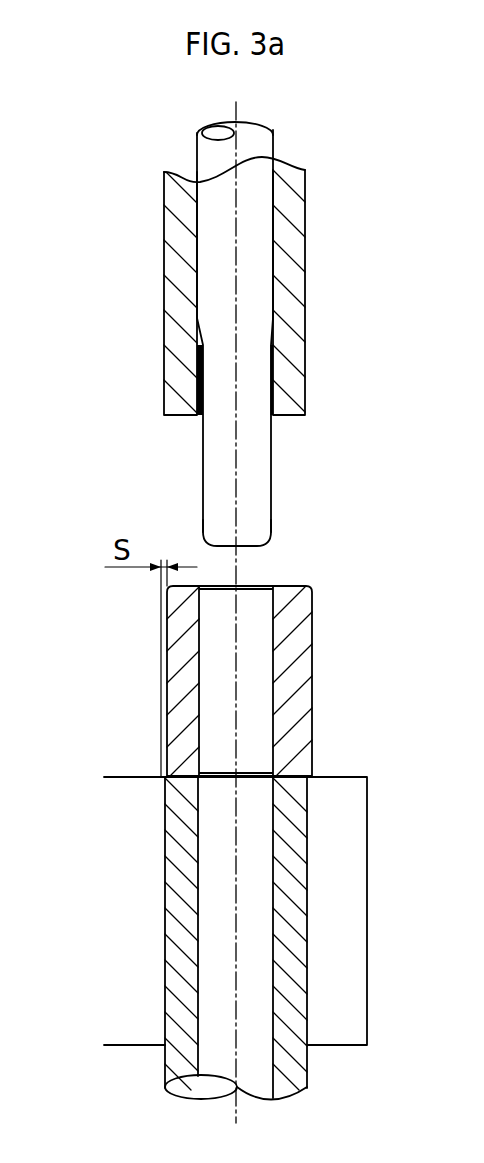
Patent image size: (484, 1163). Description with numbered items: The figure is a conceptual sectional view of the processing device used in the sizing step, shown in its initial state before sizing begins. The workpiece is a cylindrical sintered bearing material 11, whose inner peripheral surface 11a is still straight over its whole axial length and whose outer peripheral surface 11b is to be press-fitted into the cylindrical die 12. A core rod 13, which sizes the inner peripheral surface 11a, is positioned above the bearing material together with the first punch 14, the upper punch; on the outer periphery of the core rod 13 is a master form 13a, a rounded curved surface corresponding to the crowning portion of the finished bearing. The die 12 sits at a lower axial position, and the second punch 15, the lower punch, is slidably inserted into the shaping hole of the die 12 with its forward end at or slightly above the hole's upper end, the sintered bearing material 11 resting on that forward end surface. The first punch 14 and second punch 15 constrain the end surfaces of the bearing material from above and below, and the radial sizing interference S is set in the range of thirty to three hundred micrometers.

The sintered bearing material 11 is at (321, 580).
The inner peripheral surface 11a is at (278, 725).
The outer peripheral surface 11b is at (312, 676).
The die 12 is at (122, 862).
The core rod 13 is at (252, 473).
The master form 13a is at (200, 488).
The first punch 14 is at (300, 248).
The second punch 15 is at (295, 936).